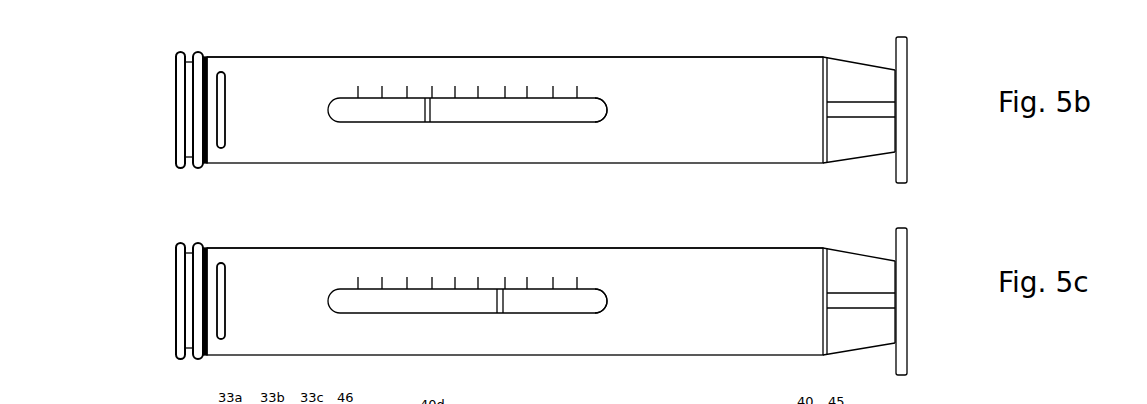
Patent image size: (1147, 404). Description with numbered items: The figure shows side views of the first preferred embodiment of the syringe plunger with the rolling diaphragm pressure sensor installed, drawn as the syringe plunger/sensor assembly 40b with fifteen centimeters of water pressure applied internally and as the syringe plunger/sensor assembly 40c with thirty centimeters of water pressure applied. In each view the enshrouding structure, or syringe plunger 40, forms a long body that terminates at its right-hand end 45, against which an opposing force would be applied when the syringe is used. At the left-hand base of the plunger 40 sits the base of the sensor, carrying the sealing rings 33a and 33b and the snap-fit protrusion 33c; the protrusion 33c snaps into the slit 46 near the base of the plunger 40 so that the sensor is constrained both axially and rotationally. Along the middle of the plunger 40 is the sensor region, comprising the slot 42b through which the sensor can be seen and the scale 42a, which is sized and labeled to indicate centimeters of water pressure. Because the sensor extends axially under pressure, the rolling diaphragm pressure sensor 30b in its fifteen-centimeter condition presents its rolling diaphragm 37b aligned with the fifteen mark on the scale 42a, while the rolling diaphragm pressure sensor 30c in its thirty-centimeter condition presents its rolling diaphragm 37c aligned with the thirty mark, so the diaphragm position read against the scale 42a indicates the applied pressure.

In FIG. 5B, the syringe plunger/sensor assembly 40b is at (500, 42).
In FIG. 5C, the syringe plunger/sensor assembly 40c is at (505, 245).
In FIG. 5B, the scale 42a is at (542, 73).
In FIG. 5C, the scale 42a is at (540, 265).
In FIG. 5B, the slot 42b is at (600, 121).
In FIG. 5C, the slot 42b is at (612, 308).
In FIG. 5B, the sealing ring 33a is at (180, 52).
In FIG. 5C, the sealing ring 33a is at (180, 244).
In FIG. 5B, the sealing ring 33b is at (200, 53).
In FIG. 5C, the sealing ring 33b is at (202, 248).
In FIG. 5B, the snap-fit protrusion 33c is at (225, 80).
In FIG. 5C, the snap-fit protrusion 33c is at (225, 278).
In FIG. 5B, the slit 46 is at (223, 108).
In FIG. 5C, the slit 46 is at (223, 298).
In FIG. 5B, the rolling diaphragm pressure sensor 30b is at (383, 122).
In FIG. 5C, the rolling diaphragm pressure sensor 30c is at (393, 313).
In FIG. 5B, the rolling diaphragm 37b is at (433, 110).
In FIG. 5C, the rolling diaphragm 37c is at (506, 306).
In FIG. 5B, the syringe plunger 40 is at (805, 72).
In FIG. 5C, the syringe plunger 40 is at (813, 260).
In FIG. 5B, the plunger end 45 is at (897, 53).
In FIG. 5C, the plunger end 45 is at (897, 250).